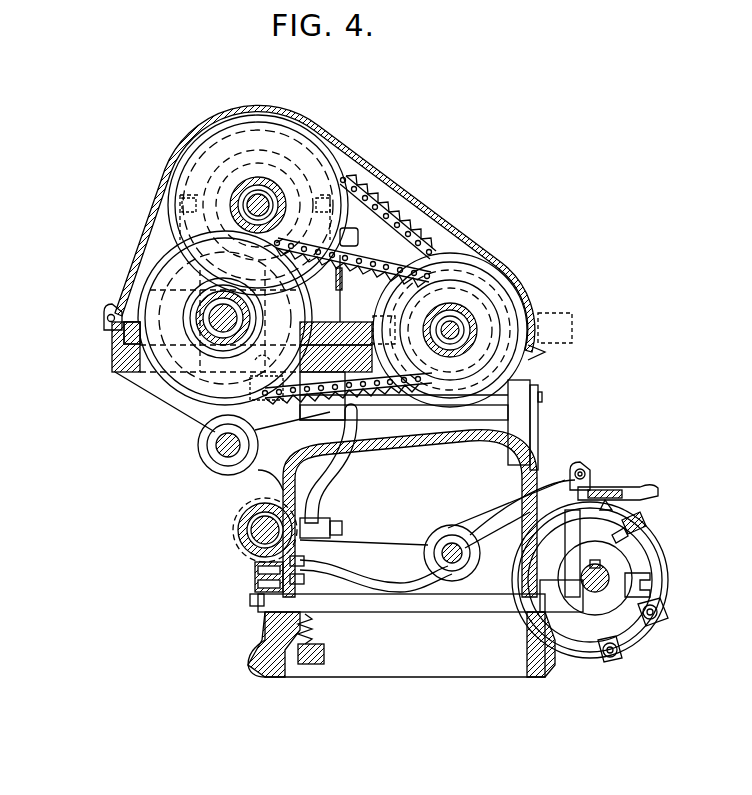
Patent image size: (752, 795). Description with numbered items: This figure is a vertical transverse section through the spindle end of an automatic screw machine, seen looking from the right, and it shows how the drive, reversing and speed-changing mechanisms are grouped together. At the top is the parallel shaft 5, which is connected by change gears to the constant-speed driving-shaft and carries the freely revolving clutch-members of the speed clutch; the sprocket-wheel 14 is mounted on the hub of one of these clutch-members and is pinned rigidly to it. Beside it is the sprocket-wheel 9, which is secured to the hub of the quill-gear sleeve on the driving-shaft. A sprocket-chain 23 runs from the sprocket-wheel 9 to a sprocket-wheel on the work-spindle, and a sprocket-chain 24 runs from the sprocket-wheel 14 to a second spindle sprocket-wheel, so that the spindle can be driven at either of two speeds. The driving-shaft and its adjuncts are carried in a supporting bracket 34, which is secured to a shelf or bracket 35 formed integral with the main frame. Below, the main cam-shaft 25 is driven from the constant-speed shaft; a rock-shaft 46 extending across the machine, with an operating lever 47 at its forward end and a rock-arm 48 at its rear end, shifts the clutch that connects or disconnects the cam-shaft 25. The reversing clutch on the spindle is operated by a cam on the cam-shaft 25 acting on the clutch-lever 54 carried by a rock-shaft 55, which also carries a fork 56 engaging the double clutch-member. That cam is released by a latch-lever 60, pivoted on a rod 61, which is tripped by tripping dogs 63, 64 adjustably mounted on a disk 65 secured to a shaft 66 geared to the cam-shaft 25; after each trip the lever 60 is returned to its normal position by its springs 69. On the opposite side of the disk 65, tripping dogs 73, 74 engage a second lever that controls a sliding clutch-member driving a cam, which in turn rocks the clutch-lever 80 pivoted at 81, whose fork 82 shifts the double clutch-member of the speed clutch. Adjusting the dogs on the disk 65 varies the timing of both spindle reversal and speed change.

The parallel shaft 5 is at (250, 194).
The sprocket-wheel 9 is at (178, 378).
The sprocket-wheel 14 is at (300, 152).
The sprocket-chain 23 is at (305, 396).
The sprocket-chain 24 is at (400, 215).
The main cam-shaft 25 is at (245, 545).
The supporting bracket 34 is at (104, 318).
The shelf or bracket 35 is at (130, 374).
The rock-shaft 46 is at (415, 606).
The operating lever 47 is at (572, 482).
The rock-arm 48 is at (255, 580).
The clutch-lever 54 is at (358, 465).
The rock-shaft 55 is at (542, 398).
The fork 56 is at (525, 342).
The latch-lever 60 is at (400, 575).
The rod 61 is at (465, 562).
The tripping dog 63 is at (668, 614).
The tripping dog 64 is at (620, 656).
The disk 65 is at (662, 565).
The shaft 66 is at (603, 582).
The springs 69 is at (318, 628).
The tripping dog 73 is at (625, 494).
The tripping dog 74 is at (640, 525).
The clutch-lever 80 is at (262, 378).
The pivot 81 is at (345, 276).
The fork 82 is at (330, 224).